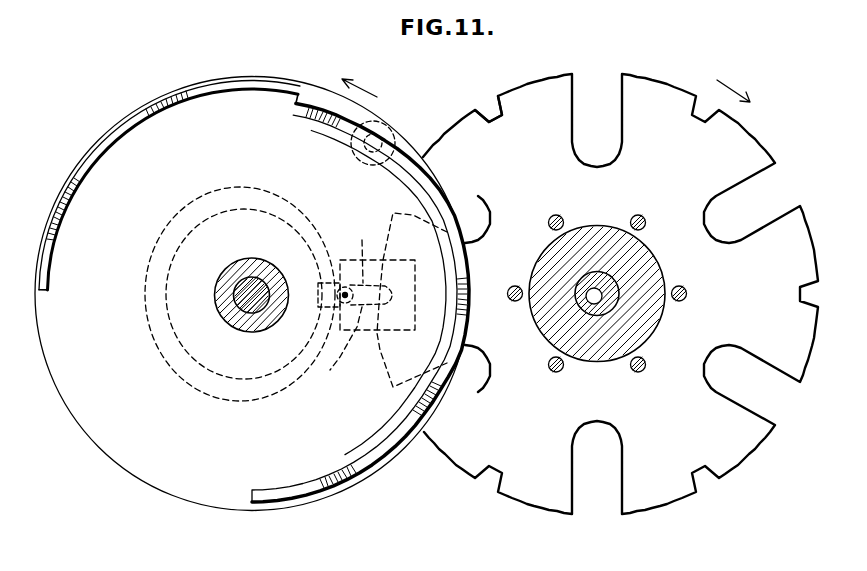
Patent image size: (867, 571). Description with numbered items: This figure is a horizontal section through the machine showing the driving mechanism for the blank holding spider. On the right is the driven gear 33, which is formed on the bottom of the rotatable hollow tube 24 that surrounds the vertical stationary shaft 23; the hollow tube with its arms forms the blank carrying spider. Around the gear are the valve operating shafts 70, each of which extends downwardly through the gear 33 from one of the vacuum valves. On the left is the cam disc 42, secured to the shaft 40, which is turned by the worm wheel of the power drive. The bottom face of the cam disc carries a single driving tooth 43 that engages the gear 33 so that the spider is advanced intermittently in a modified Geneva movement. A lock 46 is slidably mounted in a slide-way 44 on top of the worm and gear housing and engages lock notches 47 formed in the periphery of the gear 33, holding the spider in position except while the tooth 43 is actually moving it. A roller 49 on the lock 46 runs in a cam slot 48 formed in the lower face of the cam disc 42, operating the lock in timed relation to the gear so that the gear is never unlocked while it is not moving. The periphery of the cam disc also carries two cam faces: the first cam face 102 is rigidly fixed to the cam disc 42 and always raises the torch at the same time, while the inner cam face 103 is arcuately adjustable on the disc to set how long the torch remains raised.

The vertical stationary shaft 23 is at (608, 276).
The rotatable hollow tube 24 is at (664, 277).
The driven gear 33 is at (722, 453).
The shaft 40 is at (245, 313).
The cam disc 42 is at (221, 494).
The driving tooth 43 is at (357, 161).
The slide-way 44 is at (366, 312).
The lock 46 is at (362, 262).
The lock notches 47 is at (490, 102).
The cam slot 48 is at (286, 386).
The roller 49 is at (325, 306).
The valve operating shaft 70 is at (633, 369).
The first cam face 102 is at (117, 129).
The inner cam face 103 is at (322, 111).